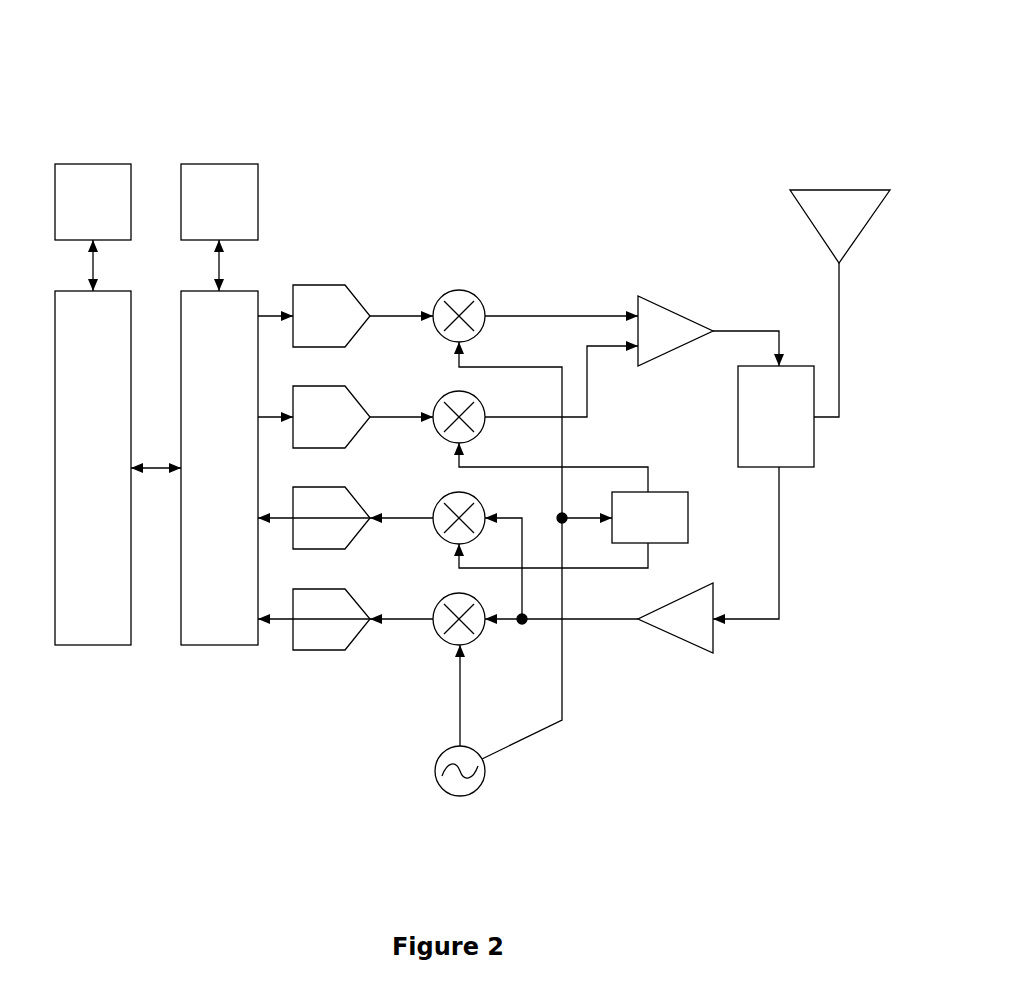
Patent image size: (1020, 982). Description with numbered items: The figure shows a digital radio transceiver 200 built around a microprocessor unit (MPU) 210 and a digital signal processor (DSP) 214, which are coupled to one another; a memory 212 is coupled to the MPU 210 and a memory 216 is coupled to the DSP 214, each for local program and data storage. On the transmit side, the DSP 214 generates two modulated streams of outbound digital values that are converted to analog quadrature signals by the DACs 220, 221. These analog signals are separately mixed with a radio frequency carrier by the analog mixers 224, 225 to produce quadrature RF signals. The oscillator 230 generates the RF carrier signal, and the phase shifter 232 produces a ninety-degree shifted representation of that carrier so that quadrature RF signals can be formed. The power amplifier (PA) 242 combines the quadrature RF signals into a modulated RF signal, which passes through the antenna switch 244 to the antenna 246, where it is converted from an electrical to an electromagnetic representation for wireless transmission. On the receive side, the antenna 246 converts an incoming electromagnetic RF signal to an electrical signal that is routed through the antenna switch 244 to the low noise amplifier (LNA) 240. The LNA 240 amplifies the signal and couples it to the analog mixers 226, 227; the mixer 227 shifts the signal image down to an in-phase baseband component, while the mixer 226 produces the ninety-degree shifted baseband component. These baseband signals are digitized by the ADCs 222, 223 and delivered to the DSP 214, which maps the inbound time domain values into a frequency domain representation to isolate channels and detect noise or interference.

The digital radio transceiver 200 is at (676, 74).
The microprocessor unit 210 is at (75, 491).
The memory 212 is at (75, 225).
The digital signal processor 214 is at (201, 491).
The memory 216 is at (201, 225).
The digital to analog converter 220 is at (303, 339).
The digital to analog converter 221 is at (303, 440).
The analog to digital converter 222 is at (303, 541).
The analog to digital converter 223 is at (303, 642).
The analog mixer 224 is at (445, 290).
The analog mixer 225 is at (445, 392).
The analog mixer 226 is at (442, 496).
The analog mixer 227 is at (442, 597).
The oscillator 230 is at (435, 762).
The phase shifter 232 is at (632, 530).
The low noise amplifier 240 is at (695, 649).
The power amplifier 242 is at (655, 300).
The antenna switch 244 is at (758, 427).
The antenna 246 is at (813, 231).